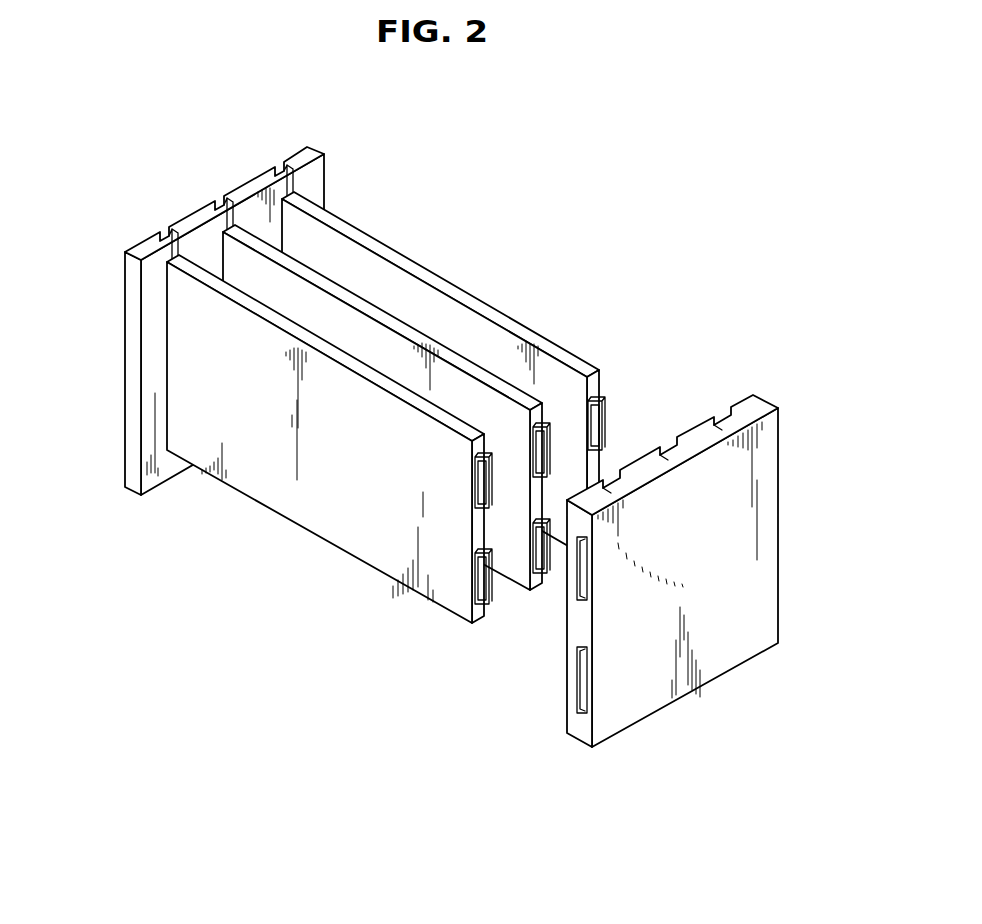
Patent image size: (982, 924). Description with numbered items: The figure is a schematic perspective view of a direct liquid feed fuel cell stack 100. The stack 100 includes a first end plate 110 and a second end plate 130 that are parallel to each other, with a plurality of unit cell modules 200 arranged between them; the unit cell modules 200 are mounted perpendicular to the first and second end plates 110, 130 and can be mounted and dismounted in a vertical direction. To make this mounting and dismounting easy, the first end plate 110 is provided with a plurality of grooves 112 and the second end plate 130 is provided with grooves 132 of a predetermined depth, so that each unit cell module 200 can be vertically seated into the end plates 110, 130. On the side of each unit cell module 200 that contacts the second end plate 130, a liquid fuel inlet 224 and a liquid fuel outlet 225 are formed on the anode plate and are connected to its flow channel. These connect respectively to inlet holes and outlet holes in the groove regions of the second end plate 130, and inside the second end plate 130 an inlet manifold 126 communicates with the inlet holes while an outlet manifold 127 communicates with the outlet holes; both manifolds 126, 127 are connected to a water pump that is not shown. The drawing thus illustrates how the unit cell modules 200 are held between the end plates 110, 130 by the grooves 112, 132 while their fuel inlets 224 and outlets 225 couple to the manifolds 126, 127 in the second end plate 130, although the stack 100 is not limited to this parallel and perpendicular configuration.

The direct liquid feed fuel cell stack 100 is at (440, 215).
The first end plate 110 is at (224, 293).
The grooves 112 is at (177, 235).
The second end plate 130 is at (662, 556).
The grooves 132 is at (661, 443).
The inlet manifold 126 is at (580, 586).
The outlet manifold 127 is at (578, 682).
The unit cell modules 200 is at (386, 407).
The liquid fuel inlet 224 is at (474, 485).
The liquid fuel outlet 225 is at (476, 597).